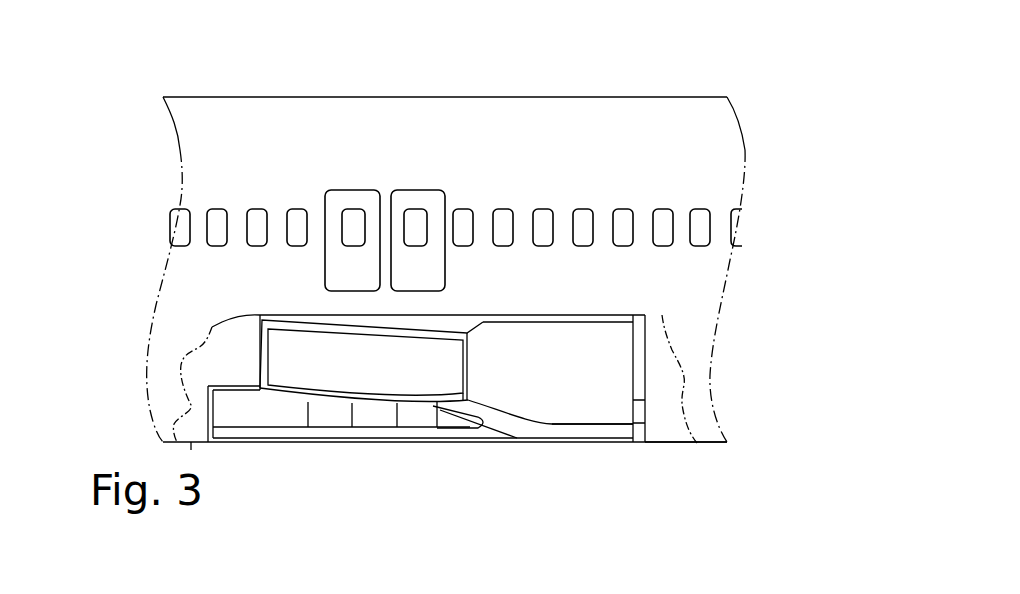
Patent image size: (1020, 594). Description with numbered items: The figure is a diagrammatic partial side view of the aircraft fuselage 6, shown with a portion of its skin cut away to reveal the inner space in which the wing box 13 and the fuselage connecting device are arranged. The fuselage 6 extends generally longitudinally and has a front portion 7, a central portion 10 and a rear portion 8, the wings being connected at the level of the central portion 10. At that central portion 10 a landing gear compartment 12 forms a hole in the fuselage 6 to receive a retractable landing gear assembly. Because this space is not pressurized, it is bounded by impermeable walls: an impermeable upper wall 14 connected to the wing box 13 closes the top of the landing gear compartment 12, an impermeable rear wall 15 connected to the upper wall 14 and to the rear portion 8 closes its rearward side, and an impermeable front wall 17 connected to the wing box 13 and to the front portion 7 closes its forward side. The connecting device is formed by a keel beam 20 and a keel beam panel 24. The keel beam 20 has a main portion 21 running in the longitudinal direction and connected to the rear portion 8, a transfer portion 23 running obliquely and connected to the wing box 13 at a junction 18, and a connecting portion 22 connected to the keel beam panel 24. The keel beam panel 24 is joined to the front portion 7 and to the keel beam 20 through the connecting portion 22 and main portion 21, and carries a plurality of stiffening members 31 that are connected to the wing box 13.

The fuselage 6 is at (246, 108).
The front portion 7 is at (191, 443).
The rear portion 8 is at (675, 445).
The central portion 10 is at (409, 486).
The landing gear compartment 12 is at (575, 375).
The wing box 13 is at (262, 358).
The impermeable upper wall 14 is at (520, 318).
The impermeable rear wall 15 is at (639, 333).
The impermeable front wall 17 is at (228, 384).
The junction 18 is at (441, 400).
The keel beam 20 is at (515, 413).
The main portion 21 is at (590, 432).
The connecting portion 22 is at (492, 428).
The transfer portion 23 is at (468, 411).
The keel beam panel 24 is at (337, 432).
The stiffening members 31 is at (308, 417).